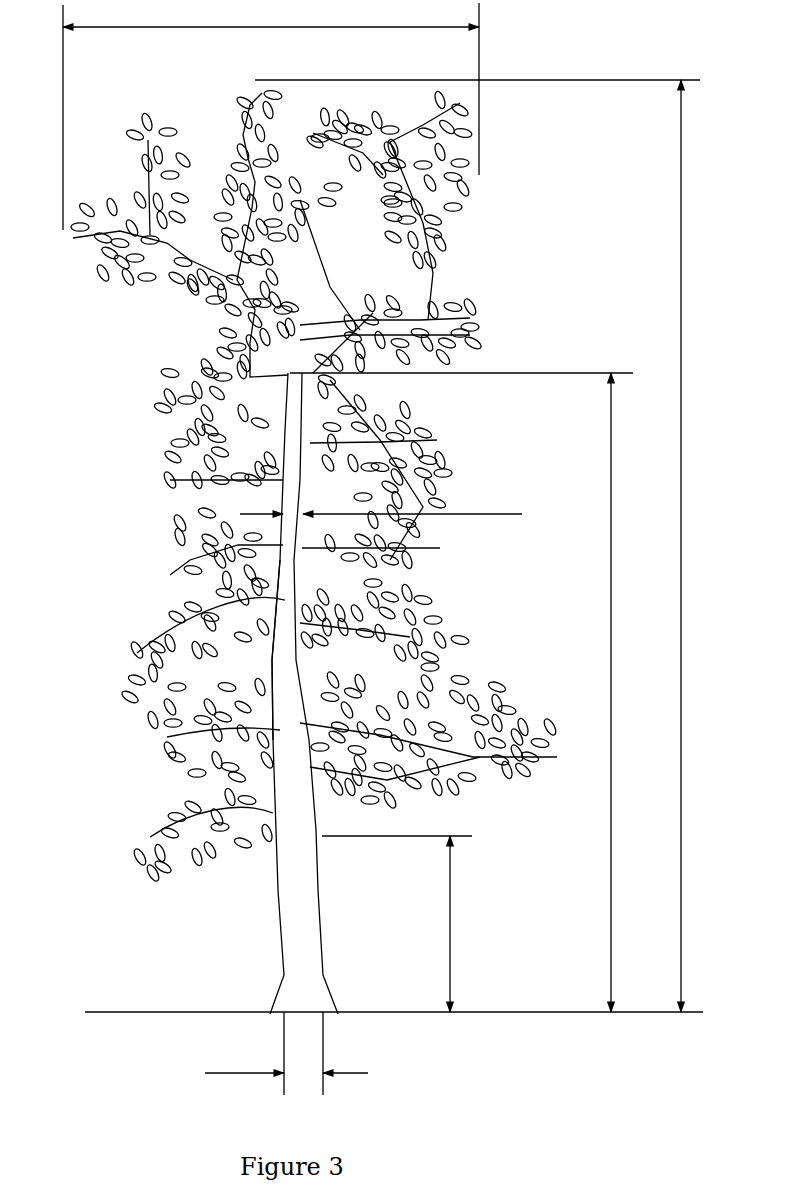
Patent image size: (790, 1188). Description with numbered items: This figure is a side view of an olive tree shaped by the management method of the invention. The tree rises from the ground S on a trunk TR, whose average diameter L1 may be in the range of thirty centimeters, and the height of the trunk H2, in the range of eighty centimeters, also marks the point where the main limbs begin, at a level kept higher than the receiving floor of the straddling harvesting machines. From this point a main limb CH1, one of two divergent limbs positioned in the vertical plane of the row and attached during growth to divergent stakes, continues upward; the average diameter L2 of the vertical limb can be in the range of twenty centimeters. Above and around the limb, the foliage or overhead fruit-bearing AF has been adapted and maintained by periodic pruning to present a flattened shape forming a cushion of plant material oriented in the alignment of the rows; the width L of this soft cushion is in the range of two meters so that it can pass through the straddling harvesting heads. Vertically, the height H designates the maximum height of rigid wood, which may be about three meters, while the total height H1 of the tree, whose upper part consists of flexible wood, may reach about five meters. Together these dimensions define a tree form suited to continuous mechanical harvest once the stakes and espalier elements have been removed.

The foliage or overhead fruit-bearing AF is at (150, 311).
The main limb CH1 is at (290, 668).
The trunk TR is at (298, 942).
The ground S is at (394, 1030).
The width of the cushion L is at (271, 116).
The average diameter of the tree trunks L1 is at (286, 1053).
The average diameter of the vertical limb L2 is at (381, 502).
The maximum height of rigid wood H is at (461, 692).
The total height of the trees H1 is at (481, 546).
The height of the trunk H2 is at (400, 924).